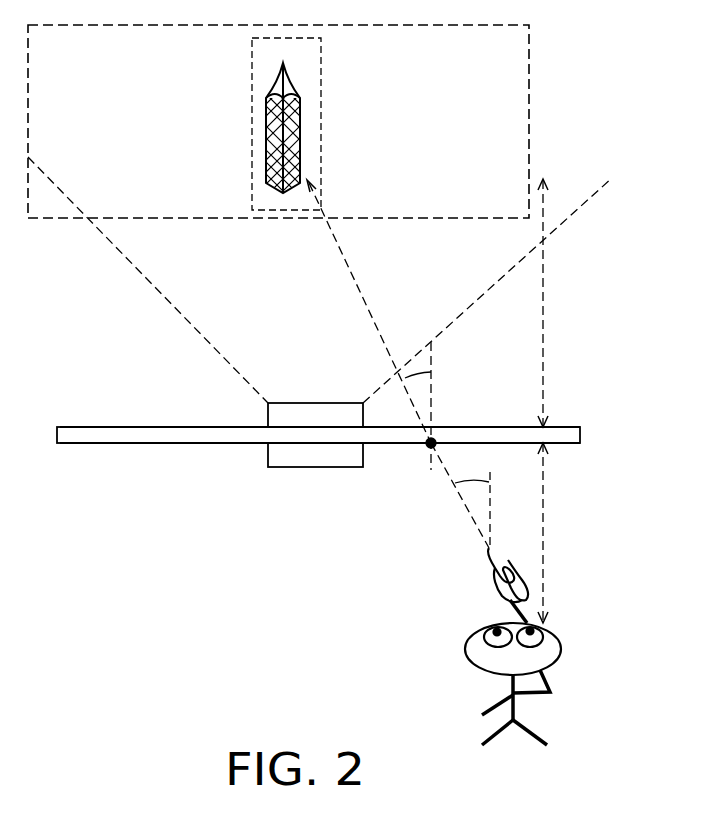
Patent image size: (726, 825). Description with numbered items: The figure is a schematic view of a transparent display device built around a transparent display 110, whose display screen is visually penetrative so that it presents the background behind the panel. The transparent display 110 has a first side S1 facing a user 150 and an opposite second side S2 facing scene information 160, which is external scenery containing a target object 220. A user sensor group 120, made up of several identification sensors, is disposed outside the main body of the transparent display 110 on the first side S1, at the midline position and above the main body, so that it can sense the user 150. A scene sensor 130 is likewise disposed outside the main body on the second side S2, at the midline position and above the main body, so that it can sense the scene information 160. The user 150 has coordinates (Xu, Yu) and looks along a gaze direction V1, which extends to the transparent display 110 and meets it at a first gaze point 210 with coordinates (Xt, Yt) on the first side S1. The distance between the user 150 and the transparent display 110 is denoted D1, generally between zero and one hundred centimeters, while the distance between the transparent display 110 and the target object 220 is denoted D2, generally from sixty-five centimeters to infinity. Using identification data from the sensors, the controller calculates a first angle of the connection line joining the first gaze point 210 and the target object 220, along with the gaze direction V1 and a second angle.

The transparent display 110 is at (572, 437).
The user sensor group 120 is at (315, 467).
The scene sensor 130 is at (313, 403).
The user 150 is at (515, 707).
The scene information 160 is at (529, 92).
The first gaze point 210 is at (427, 446).
The target object 220 is at (321, 100).
The distance between the user and the transparent display D1 is at (543, 535).
The distance between the transparent display and the target object D2 is at (543, 275).
The first side S1 is at (580, 443).
The second side S2 is at (580, 427).
The gaze direction V1 is at (480, 537).